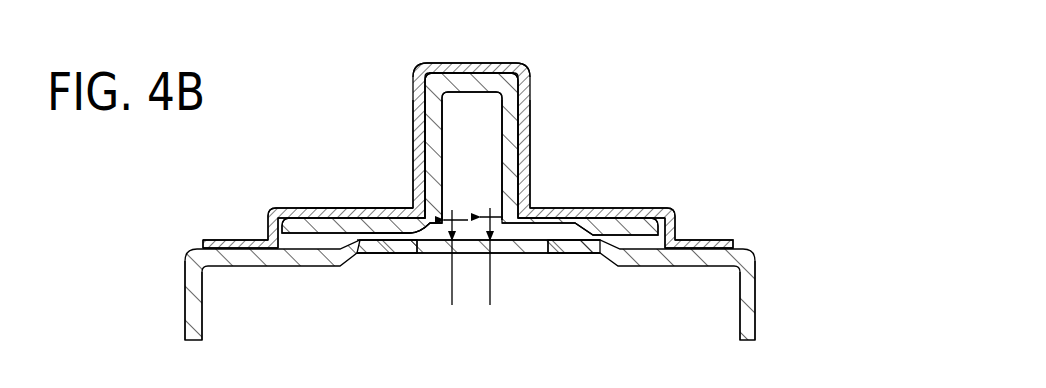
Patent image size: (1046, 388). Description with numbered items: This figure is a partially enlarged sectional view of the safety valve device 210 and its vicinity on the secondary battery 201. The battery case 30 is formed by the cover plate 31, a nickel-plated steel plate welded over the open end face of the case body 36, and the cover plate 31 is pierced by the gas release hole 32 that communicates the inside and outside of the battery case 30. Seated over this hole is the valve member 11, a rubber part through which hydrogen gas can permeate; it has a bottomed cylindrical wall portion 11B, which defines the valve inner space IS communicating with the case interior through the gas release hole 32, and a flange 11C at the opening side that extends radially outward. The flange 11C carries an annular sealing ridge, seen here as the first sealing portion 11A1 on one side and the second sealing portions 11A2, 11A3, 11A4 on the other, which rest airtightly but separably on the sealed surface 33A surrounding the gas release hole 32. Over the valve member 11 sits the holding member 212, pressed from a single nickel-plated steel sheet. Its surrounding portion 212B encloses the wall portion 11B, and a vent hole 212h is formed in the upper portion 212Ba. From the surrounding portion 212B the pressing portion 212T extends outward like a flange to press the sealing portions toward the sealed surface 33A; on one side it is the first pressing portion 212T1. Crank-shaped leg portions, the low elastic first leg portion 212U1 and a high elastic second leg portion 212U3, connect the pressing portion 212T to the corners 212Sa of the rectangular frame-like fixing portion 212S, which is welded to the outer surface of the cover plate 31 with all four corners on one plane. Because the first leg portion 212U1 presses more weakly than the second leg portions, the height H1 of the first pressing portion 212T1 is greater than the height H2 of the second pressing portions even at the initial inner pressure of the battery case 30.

The sealing structure 201 is at (500, 181).
The cap unit 210 is at (500, 181).
The valve member 11 is at (455, 199).
The wall portion 11B is at (418, 98).
The flange 11C is at (353, 218).
The first sealing portion 11A1 is at (568, 236).
The second sealing portion 11A2 is at (331, 287).
The second sealing portion 11A3 is at (377, 233).
The second sealing portion 11A4 is at (400, 228).
The holding member 212 is at (500, 128).
The surrounding portion 212B is at (418, 130).
The upper portion 212Ba is at (437, 63).
The vent hole 212h is at (480, 63).
The pressing portion 212T is at (380, 207).
The first pressing portion 212T1 is at (550, 200).
The first leg portion 212U1 is at (605, 210).
The second leg portion 212U3 is at (290, 208).
The fixing portion 212S is at (693, 243).
The corner 212Sa is at (218, 240).
The battery case 30 is at (525, 290).
The cover plate 31 is at (752, 287).
The case body 36 is at (752, 320).
The gas release hole 32 is at (478, 303).
The sealed surface 33A is at (402, 253).
The valve inner space IS is at (492, 159).
The height of the first pressing portion H1 is at (490, 260).
The height of the second pressing portions H2 is at (452, 260).